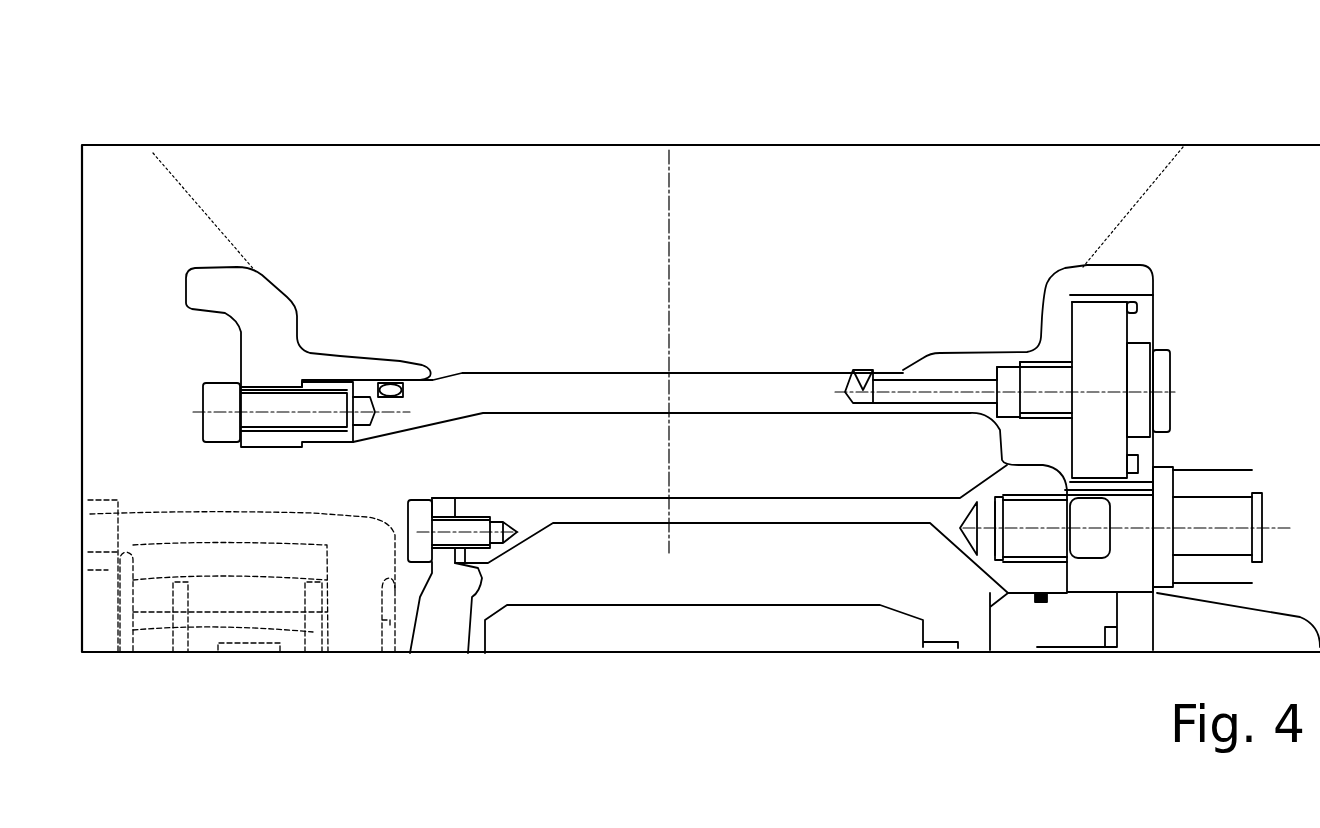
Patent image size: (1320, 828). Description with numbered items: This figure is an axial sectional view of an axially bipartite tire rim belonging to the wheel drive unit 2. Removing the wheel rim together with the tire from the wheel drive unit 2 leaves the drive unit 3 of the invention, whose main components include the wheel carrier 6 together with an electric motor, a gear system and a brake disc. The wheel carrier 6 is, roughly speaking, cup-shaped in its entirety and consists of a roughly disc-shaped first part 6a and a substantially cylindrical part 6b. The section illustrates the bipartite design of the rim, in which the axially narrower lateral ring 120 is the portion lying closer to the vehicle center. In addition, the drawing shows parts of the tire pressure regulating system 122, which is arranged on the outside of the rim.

The wheel drive unit 2 is at (1182, 127).
The drive unit 3 is at (868, 567).
The wheel carrier 6 is at (533, 493).
The first part 6a is at (443, 603).
The cylindrical part 6b is at (712, 504).
The lateral ring 120 is at (273, 317).
The tire pressure regulating system 122 is at (1100, 350).